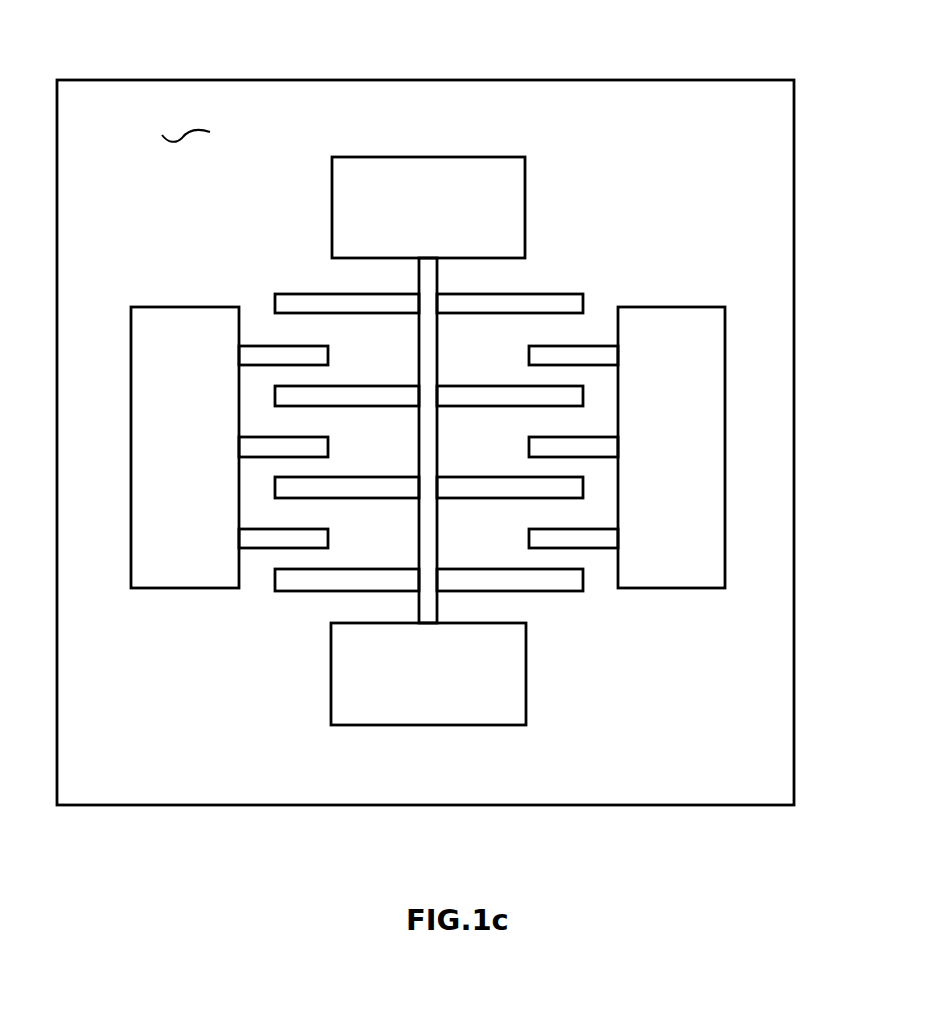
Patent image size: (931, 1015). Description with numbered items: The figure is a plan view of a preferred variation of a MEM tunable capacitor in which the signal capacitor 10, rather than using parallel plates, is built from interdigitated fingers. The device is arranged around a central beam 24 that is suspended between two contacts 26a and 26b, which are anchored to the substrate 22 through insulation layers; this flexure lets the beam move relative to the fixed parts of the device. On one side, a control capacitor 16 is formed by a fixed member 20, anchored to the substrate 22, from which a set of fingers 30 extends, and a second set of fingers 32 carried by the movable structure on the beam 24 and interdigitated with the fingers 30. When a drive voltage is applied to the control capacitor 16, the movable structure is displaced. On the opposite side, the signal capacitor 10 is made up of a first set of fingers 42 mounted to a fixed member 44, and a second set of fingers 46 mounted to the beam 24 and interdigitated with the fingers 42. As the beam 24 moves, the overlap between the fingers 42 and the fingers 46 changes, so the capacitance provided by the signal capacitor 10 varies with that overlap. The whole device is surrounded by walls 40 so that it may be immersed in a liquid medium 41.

The signal capacitor 10 is at (683, 160).
The control capacitor 16 is at (145, 224).
The fixed member 20 is at (153, 428).
The substrate 22 is at (745, 791).
The beam 24 is at (427, 338).
The contact 26a is at (424, 157).
The contact 26b is at (359, 673).
The set of fingers 30 is at (260, 353).
The second set of fingers 32 is at (300, 294).
The walls 40 is at (645, 80).
The liquid medium 41 is at (183, 137).
The first set of fingers 42 is at (593, 551).
The fixed member 44 is at (703, 427).
The second set of fingers 46 is at (514, 487).